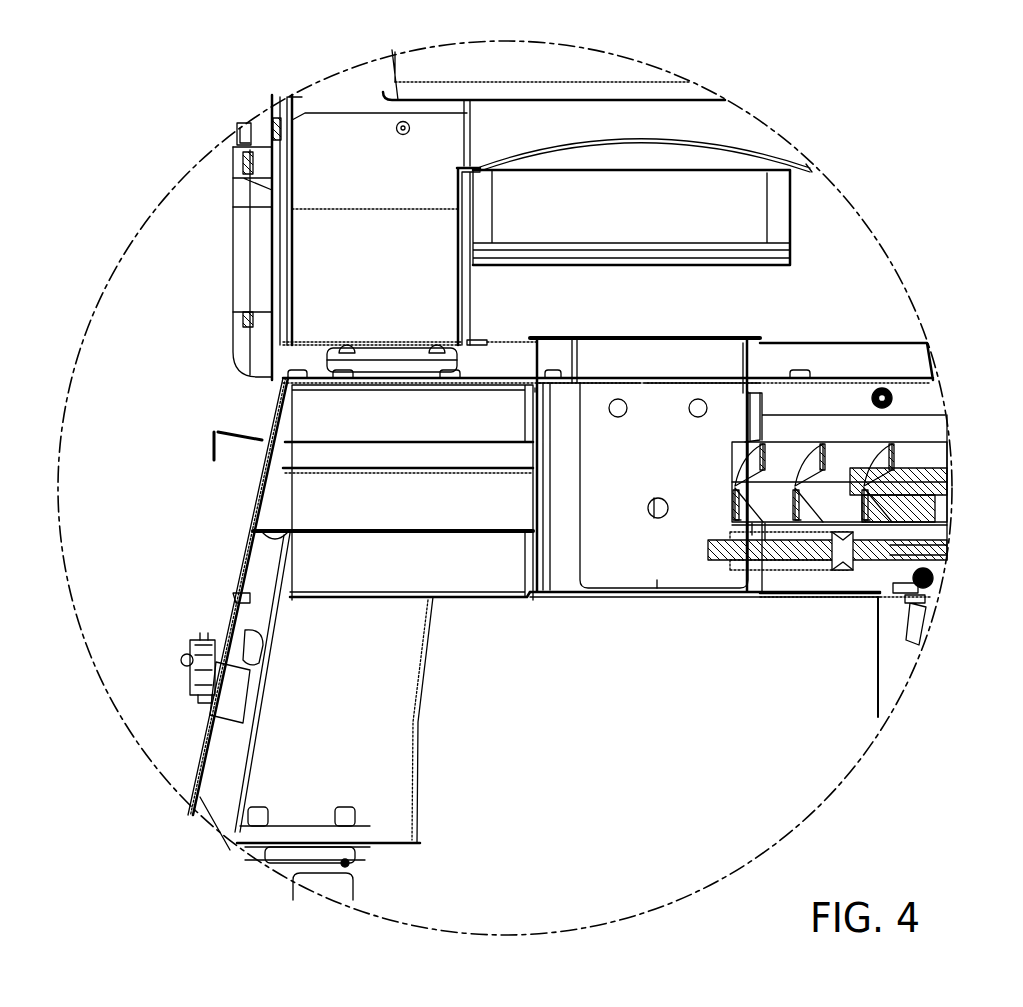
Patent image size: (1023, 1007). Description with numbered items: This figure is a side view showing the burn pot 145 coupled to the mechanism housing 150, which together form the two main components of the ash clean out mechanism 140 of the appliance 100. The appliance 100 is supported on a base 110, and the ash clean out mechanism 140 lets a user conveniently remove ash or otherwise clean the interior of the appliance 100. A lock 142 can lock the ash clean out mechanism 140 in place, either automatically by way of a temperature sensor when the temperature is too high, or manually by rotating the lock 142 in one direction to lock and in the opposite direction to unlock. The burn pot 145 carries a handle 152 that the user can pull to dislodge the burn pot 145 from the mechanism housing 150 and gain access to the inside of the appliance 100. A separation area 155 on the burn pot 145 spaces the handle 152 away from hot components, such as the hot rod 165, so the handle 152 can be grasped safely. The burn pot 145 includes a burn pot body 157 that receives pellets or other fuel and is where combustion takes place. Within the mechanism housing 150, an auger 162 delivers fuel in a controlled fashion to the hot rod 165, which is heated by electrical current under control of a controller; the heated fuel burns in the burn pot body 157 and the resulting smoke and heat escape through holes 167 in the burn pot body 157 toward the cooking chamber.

The appliance 100 is at (150, 116).
The base 110 is at (217, 808).
The ash clean out mechanism 140 is at (226, 541).
The lock 142 is at (200, 700).
The burn pot 145 is at (418, 512).
The mechanism housing 150 is at (782, 526).
The handle 152 is at (215, 432).
The separation area 155 is at (437, 460).
The burn pot body 157 is at (618, 547).
The auger 162 is at (905, 456).
The hot rod 165 is at (715, 543).
The holes 167 is at (700, 392).